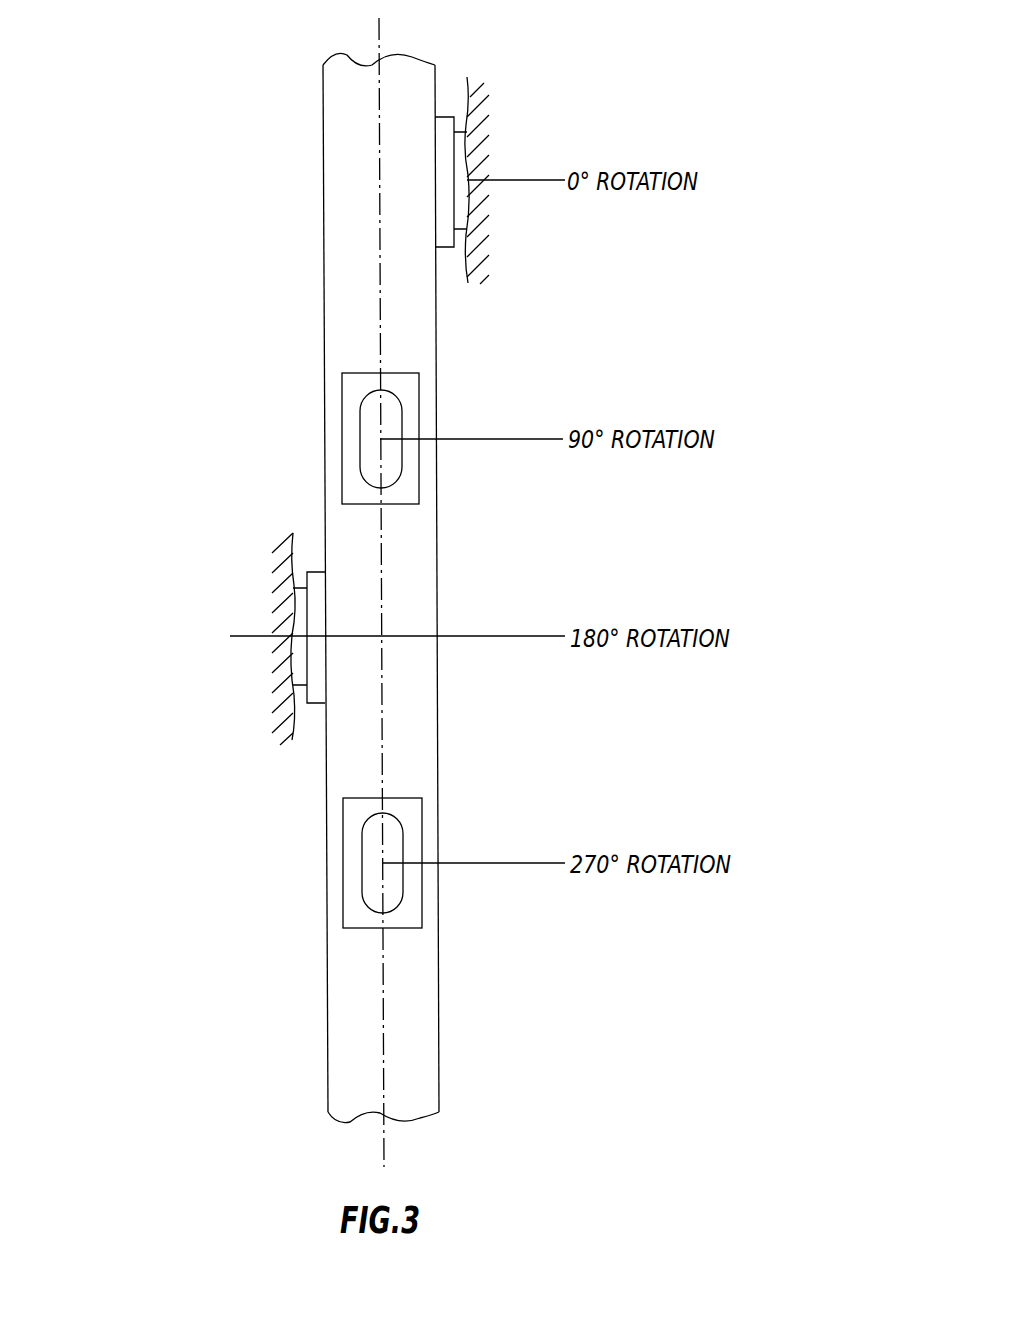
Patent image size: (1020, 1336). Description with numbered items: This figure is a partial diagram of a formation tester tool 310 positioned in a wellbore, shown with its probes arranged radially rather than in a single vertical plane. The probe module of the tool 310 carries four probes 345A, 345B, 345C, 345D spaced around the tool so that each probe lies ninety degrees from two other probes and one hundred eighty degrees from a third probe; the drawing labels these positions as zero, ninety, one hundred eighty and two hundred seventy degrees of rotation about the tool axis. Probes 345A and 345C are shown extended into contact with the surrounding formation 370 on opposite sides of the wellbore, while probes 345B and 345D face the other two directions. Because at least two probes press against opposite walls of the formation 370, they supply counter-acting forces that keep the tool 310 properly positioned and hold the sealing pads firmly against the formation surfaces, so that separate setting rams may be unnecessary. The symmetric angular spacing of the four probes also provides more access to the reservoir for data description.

The formation tester tool 310 is at (320, 212).
The probe 345A is at (451, 86).
The probe 345B is at (339, 423).
The probe 345C is at (330, 607).
The probe 345D is at (425, 817).
The formation 370 is at (494, 117).